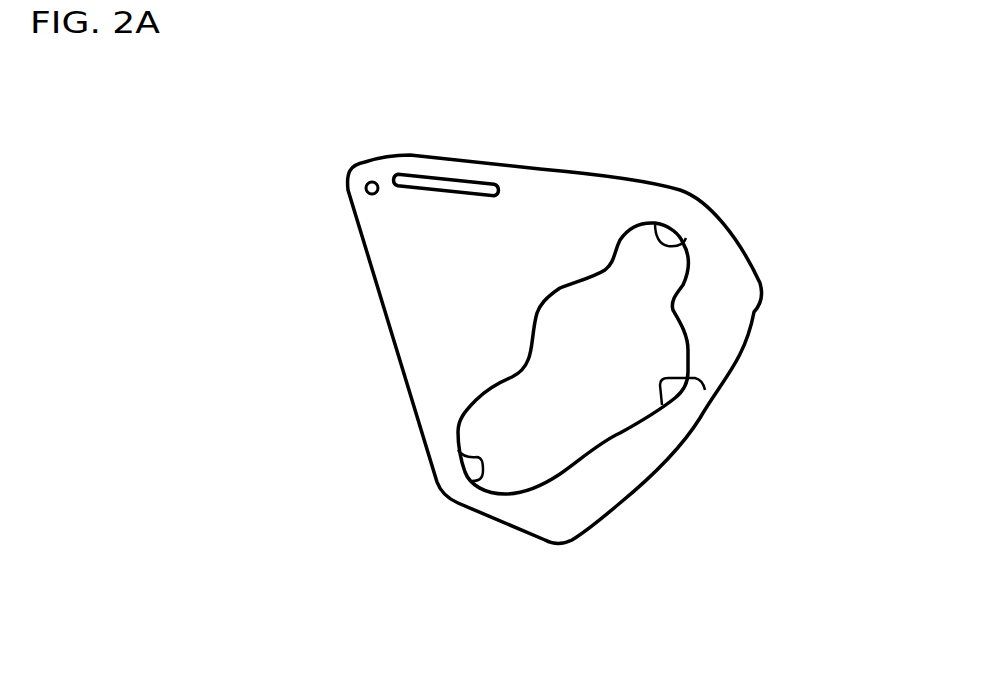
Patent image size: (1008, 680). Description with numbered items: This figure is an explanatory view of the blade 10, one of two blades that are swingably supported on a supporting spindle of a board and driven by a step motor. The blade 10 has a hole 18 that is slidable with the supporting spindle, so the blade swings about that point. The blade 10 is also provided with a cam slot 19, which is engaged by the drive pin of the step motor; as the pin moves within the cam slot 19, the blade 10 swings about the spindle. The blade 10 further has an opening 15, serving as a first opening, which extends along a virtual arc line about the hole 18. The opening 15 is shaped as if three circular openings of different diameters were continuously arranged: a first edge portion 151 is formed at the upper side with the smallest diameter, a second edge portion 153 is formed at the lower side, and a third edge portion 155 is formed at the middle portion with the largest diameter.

The blade 10 is at (400, 373).
The opening 15 is at (618, 383).
The hole 18 is at (365, 186).
The cam slot 19 is at (469, 184).
The first edge portion 151 is at (686, 243).
The second edge portion 153 is at (478, 480).
The third edge portion 155 is at (705, 390).